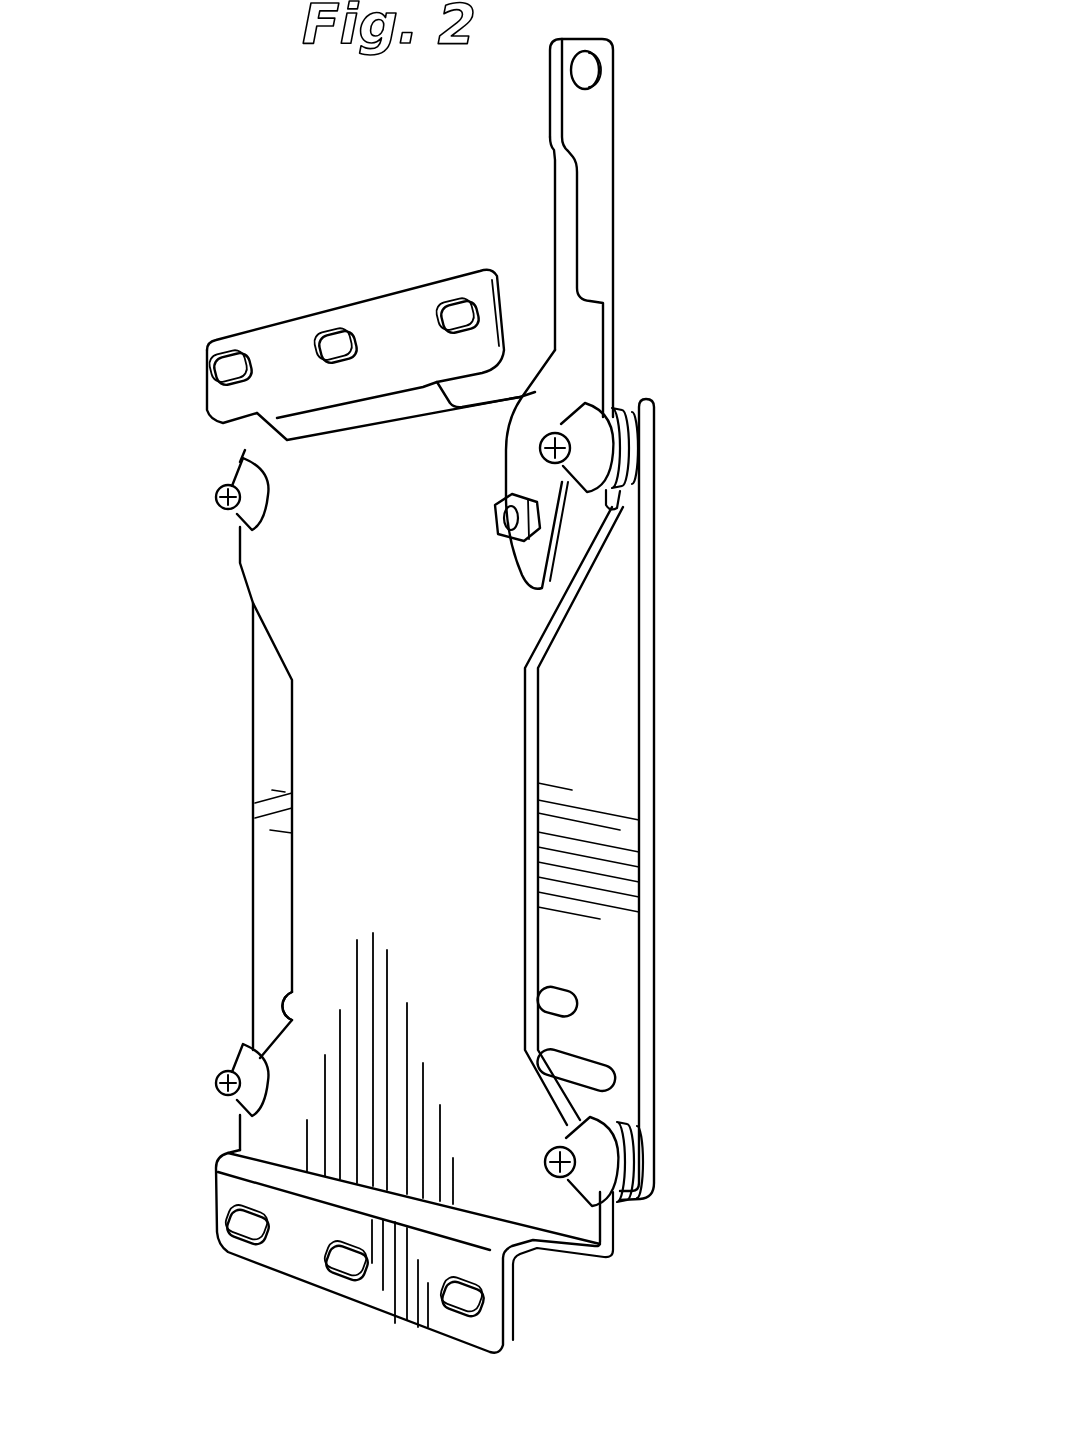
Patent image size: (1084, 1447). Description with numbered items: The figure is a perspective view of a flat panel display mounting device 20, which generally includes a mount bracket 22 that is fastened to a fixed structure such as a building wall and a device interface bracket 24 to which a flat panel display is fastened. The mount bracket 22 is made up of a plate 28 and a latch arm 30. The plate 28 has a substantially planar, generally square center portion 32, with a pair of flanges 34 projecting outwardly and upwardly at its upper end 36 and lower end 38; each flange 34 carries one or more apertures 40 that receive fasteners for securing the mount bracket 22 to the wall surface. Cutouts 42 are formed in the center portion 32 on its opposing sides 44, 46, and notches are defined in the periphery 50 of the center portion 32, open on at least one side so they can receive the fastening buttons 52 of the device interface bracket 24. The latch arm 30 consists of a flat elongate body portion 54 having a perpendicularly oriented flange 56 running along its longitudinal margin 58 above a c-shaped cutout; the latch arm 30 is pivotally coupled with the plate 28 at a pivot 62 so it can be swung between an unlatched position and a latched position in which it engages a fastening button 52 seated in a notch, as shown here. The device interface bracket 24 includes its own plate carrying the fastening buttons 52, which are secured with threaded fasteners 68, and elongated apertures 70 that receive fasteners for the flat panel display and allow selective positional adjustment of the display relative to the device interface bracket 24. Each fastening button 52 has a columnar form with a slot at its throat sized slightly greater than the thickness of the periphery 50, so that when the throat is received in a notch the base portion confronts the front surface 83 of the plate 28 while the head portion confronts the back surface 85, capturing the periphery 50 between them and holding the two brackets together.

The flat panel display mounting device 20 is at (800, 385).
The mount bracket 22 is at (312, 773).
The device interface bracket 24 is at (620, 648).
The plate 28 is at (320, 908).
The latch arm 30 is at (614, 100).
The center portion 32 is at (318, 708).
The flanges 34 is at (290, 333).
The upper end 36 is at (233, 325).
The lower end 38 is at (300, 1283).
The apertures 40 is at (455, 322).
The cutouts 42 is at (568, 760).
The side 44 is at (300, 965).
The side 46 is at (540, 870).
The periphery 50 is at (613, 498).
The fastening buttons 52 is at (628, 470).
The body portion 54 is at (588, 340).
The flange 56 is at (597, 224).
The longitudinal margin 58 is at (605, 178).
The pivot 62 is at (522, 543).
The threaded fasteners 68 is at (568, 443).
The apertures 70 is at (610, 1060).
The front surface 83 is at (540, 838).
The back surface 85 is at (575, 913).